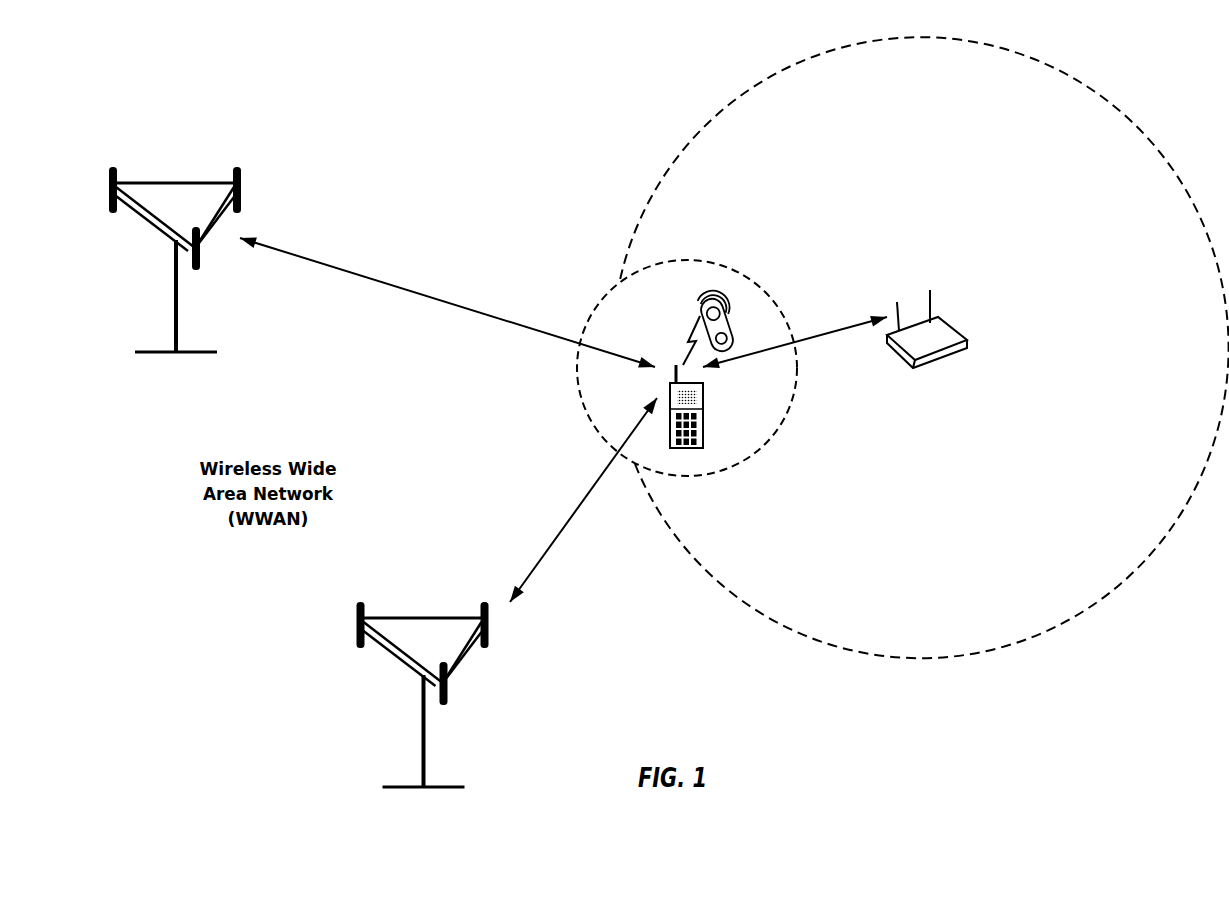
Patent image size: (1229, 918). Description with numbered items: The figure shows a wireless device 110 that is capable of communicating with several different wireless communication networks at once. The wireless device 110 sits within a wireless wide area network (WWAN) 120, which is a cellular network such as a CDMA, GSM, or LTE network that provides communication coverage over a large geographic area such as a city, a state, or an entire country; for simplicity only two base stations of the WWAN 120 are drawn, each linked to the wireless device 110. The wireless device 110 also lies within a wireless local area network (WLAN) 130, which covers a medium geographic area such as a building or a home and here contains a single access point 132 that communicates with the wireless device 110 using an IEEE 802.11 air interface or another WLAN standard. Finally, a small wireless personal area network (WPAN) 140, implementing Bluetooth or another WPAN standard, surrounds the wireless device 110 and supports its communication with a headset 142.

The wireless device 110 is at (705, 412).
The wireless wide area network (WWAN) 120 is at (312, 158).
The wireless local area network (WLAN) 130 is at (1102, 105).
The access point 132 is at (939, 323).
The wireless personal area network (WPAN) 140 is at (676, 259).
The headset 142 is at (731, 320).